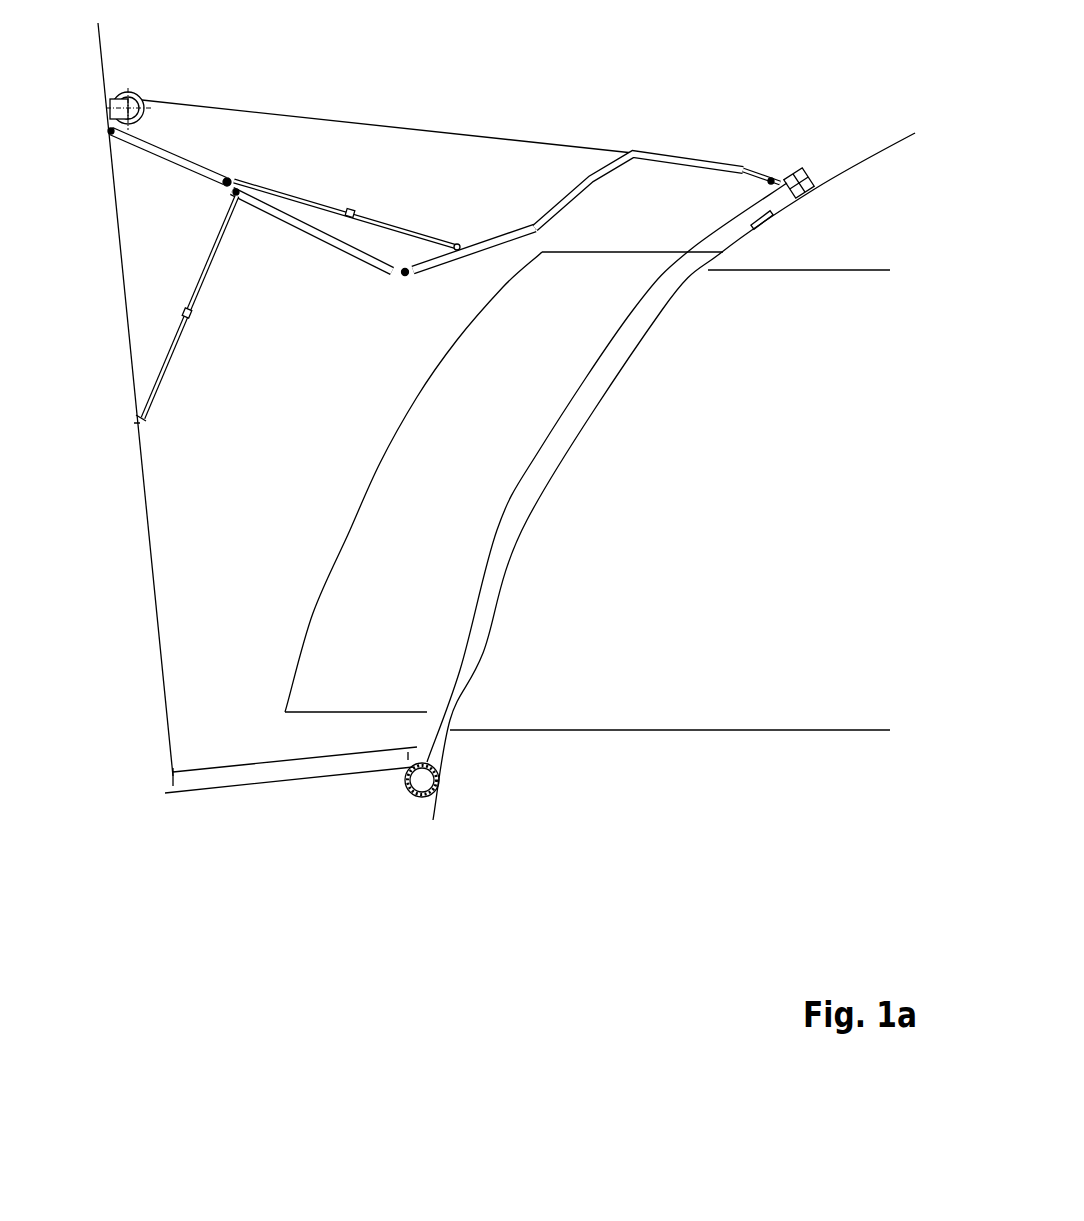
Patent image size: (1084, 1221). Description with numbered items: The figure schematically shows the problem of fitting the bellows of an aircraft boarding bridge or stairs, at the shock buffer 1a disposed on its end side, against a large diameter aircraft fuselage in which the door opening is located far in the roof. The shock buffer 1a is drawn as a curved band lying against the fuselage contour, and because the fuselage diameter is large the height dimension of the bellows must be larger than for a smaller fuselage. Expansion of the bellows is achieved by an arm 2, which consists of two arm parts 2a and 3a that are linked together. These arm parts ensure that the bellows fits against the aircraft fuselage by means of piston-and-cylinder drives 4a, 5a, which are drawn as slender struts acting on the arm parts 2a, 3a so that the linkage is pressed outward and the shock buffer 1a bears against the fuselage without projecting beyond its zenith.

The shock buffer 1a is at (569, 418).
The arm 2 is at (507, 222).
The arm part 2a is at (560, 203).
The arm part 3a is at (190, 167).
The piston-and-cylinder drive 4a is at (203, 270).
The piston-and-cylinder drive 5a is at (310, 203).